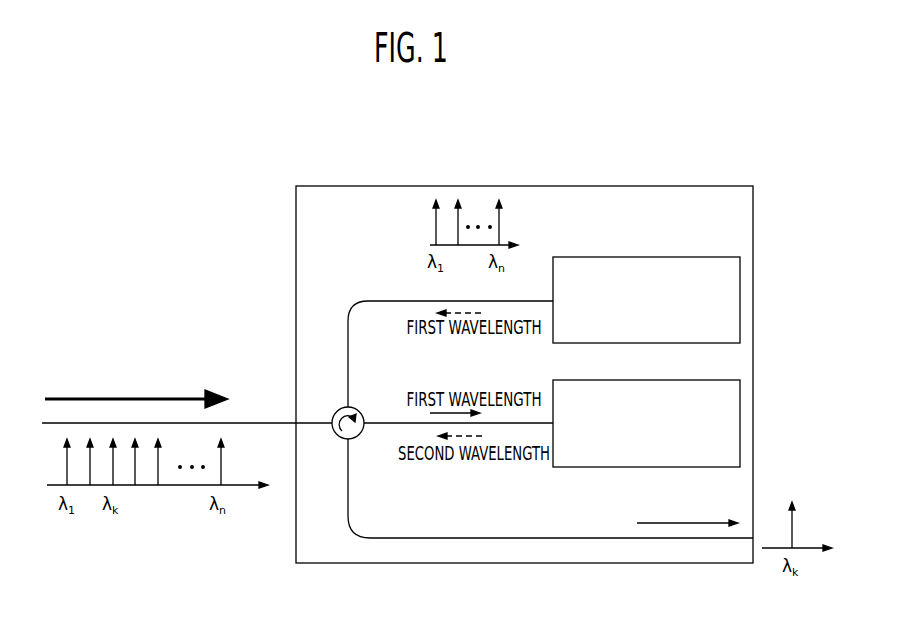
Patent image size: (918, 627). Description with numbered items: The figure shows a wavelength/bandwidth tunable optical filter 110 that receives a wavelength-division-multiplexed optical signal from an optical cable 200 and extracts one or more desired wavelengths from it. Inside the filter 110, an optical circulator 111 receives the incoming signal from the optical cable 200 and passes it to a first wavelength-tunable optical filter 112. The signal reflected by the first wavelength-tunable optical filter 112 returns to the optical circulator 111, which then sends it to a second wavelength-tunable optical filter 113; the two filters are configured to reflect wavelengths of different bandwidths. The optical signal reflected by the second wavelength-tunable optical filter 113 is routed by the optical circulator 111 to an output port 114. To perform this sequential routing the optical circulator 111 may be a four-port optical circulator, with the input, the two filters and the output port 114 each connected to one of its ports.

The wavelength/bandwidth tunable optical filter 110 is at (628, 186).
The optical circulator 111 is at (336, 410).
The first wavelength-tunable optical filter 112 is at (740, 312).
The second wavelength-tunable optical filter 113 is at (740, 422).
The output port 114 is at (558, 540).
The optical cable 200 is at (255, 423).